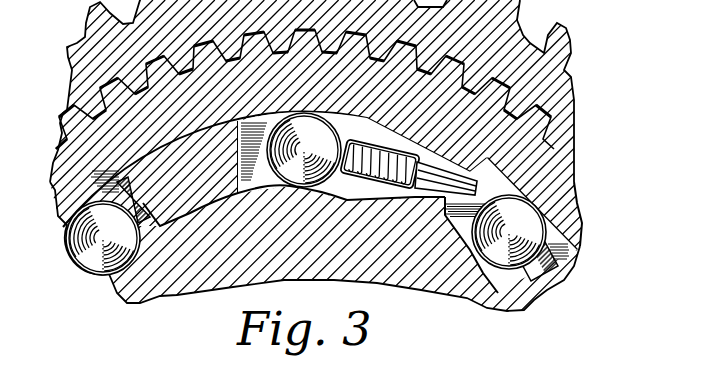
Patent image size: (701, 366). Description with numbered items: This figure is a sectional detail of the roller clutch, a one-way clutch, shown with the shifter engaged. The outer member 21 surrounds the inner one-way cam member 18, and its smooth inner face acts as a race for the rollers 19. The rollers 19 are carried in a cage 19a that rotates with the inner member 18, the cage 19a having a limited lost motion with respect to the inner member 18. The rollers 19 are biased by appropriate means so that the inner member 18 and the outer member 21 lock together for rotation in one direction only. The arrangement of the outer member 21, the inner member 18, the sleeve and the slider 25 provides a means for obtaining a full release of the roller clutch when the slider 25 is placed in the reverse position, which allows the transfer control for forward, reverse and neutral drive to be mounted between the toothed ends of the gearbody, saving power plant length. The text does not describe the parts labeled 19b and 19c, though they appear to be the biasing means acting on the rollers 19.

The slider 25 is at (558, 93).
The outer member 21 is at (569, 169).
The inner member 18 is at (462, 294).
The rollers 19 is at (85, 240).
The cage 19a is at (190, 215).
The spring 19b is at (404, 188).
The plunger 19c is at (372, 182).